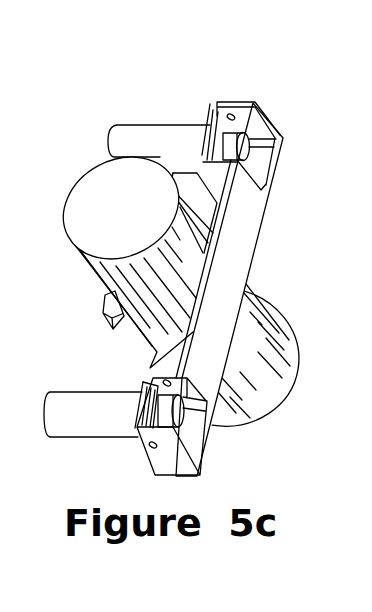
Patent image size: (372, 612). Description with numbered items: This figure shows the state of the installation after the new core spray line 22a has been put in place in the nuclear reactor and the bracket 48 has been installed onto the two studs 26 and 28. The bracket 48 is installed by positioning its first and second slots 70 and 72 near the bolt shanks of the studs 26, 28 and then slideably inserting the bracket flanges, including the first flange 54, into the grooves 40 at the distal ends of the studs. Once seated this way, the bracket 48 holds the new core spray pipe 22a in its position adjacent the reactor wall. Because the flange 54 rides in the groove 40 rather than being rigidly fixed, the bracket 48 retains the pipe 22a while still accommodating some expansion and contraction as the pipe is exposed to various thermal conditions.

The new core spray line 22a is at (271, 306).
The stud 26 is at (134, 139).
The stud 28 is at (108, 436).
The groove 40 is at (216, 128).
The bracket 48 is at (259, 224).
The first flange 54 is at (157, 425).
The first slot 70 is at (236, 128).
The second slot 72 is at (214, 126).